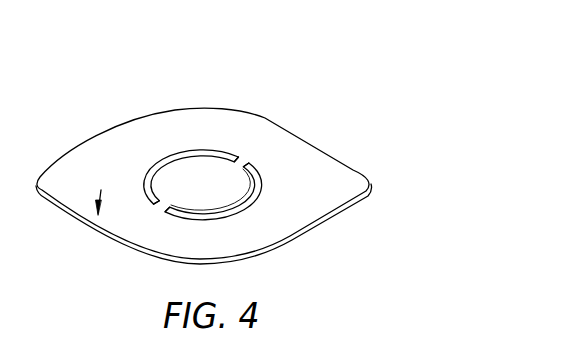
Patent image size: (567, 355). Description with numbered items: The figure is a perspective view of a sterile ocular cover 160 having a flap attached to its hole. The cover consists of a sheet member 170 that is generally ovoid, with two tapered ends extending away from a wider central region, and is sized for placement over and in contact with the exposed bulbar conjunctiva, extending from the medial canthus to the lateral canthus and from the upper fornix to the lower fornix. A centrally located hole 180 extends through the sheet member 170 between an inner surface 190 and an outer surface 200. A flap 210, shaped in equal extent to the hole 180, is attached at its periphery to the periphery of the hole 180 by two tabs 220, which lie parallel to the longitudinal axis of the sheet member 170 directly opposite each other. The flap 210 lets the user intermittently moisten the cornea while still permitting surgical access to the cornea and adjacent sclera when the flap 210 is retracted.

The sterile ocular cover 160 is at (219, 146).
The sheet member 170 is at (383, 158).
The hole 180 is at (333, 237).
The inner surface 190 is at (59, 223).
The outer surface 200 is at (193, 170).
The flap 210 is at (173, 177).
The tabs 220 is at (297, 115).